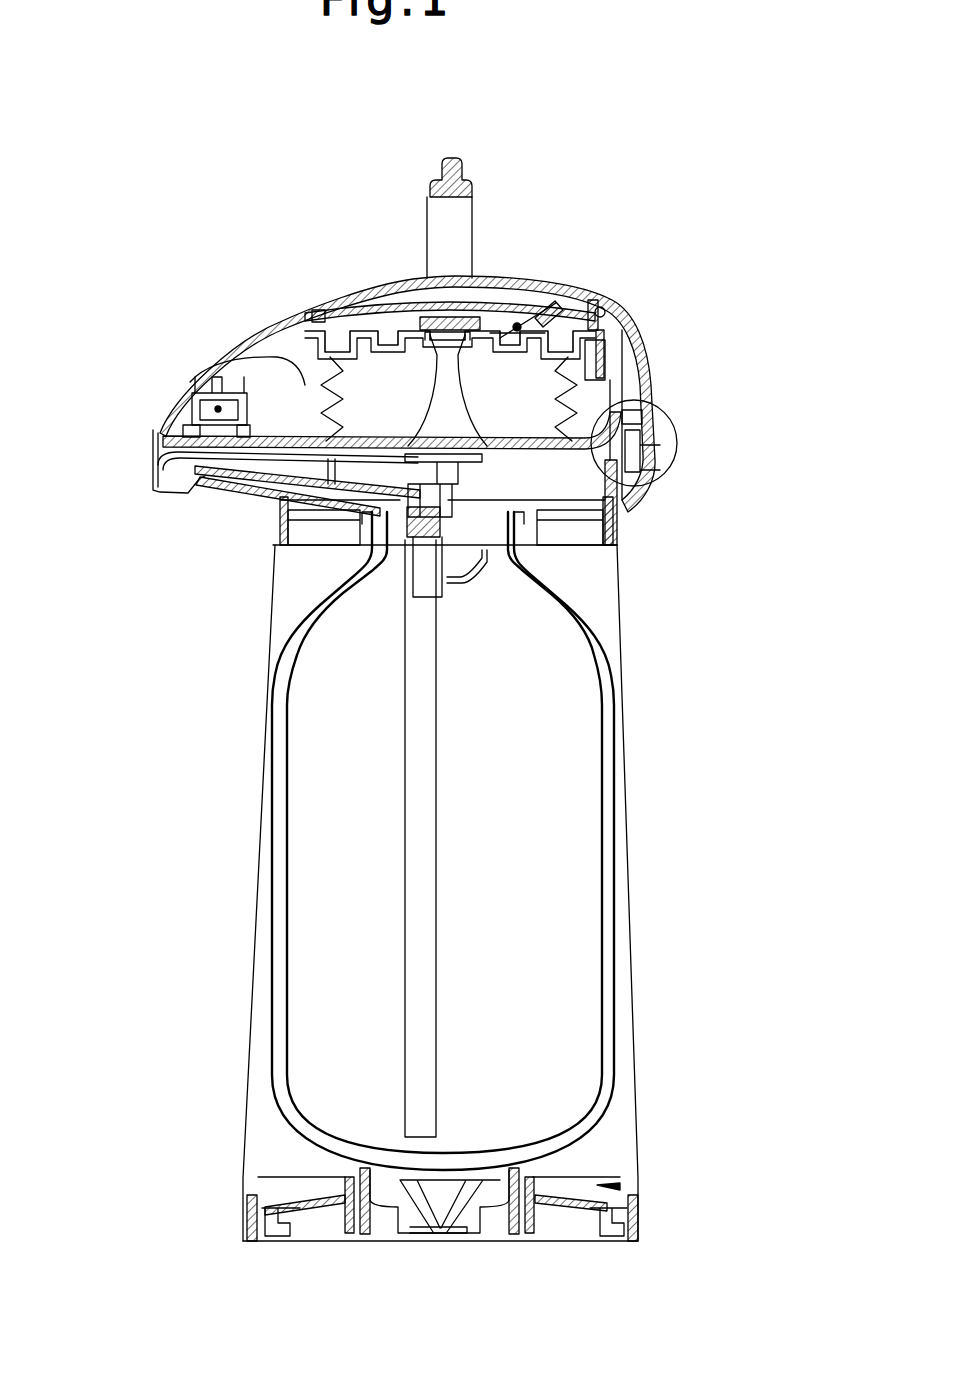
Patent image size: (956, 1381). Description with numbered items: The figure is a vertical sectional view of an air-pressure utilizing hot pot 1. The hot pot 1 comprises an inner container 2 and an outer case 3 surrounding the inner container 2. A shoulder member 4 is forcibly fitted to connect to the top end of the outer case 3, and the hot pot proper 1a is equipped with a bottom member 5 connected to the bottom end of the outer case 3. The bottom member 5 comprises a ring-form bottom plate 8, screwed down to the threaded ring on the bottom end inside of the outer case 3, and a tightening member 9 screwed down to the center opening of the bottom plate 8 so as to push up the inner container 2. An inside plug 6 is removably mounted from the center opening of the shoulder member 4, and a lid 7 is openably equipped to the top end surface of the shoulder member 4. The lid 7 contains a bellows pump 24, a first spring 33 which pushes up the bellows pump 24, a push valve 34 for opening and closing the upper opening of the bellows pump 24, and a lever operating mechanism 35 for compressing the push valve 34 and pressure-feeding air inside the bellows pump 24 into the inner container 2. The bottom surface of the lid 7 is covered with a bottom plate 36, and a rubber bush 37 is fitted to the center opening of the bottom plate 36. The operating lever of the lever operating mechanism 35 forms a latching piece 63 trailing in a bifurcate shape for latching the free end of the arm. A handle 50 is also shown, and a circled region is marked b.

The hot pot 1 is at (127, 388).
The hot pot proper 1a is at (245, 800).
The inner container 2 is at (608, 845).
The outer case 3 is at (633, 985).
The shoulder member 4 is at (632, 510).
The bottom member 5 is at (650, 1222).
The inside plug 6 is at (455, 612).
The lid 7 is at (652, 322).
The ring-form bottom plate 8 is at (265, 1238).
The tightening member 9 is at (374, 1232).
The bellows pump 24 is at (585, 398).
The first spring 33 is at (433, 393).
The push valve 34 is at (345, 297).
The lever operating mechanism 35 is at (615, 282).
The bottom plate 36 is at (528, 443).
The rubber bush 37 is at (395, 500).
The handle 50 is at (430, 188).
The latching piece 63 is at (527, 317).
The latch portion b is at (677, 440).